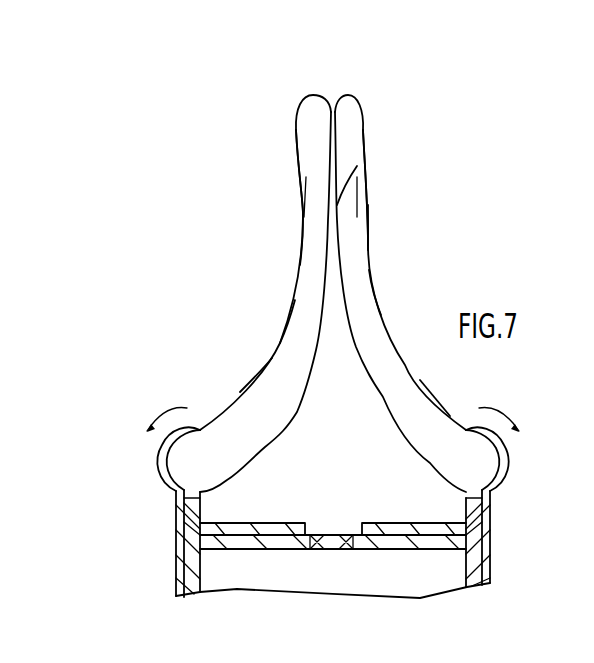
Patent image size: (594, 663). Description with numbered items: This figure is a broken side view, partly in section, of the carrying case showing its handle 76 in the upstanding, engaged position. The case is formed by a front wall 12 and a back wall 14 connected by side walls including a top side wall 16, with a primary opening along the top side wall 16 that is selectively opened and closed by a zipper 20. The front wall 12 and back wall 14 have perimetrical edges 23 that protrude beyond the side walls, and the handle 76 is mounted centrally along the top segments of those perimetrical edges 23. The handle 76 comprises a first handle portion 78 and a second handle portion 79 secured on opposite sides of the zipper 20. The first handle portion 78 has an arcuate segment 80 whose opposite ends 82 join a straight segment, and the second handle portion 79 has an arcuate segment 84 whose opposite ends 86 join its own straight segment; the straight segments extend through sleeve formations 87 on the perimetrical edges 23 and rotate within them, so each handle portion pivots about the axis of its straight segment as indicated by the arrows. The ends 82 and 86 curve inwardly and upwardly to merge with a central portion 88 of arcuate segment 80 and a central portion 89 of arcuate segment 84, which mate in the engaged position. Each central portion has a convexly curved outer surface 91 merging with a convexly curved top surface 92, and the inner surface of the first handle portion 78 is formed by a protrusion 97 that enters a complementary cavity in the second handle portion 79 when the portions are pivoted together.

The front wall 12 is at (502, 559).
The back wall 14 is at (175, 576).
The top side wall 16 is at (386, 517).
The zipper 20 is at (322, 533).
The perimetrical edges 23 is at (215, 512).
The handle 76 is at (289, 122).
The first handle portion 78 is at (288, 285).
The second handle portion 79 is at (372, 242).
The arcuate segment 80 is at (292, 312).
The ends 82 is at (257, 392).
The arcuate segment 84 is at (371, 292).
The ends 86 is at (437, 414).
The sleeve formations 87 is at (162, 472).
The central portion 88 is at (302, 224).
The central portion 89 is at (369, 223).
The outer surface 91 is at (296, 148).
The top surface 92 is at (309, 99).
The protrusion 97 is at (357, 166).